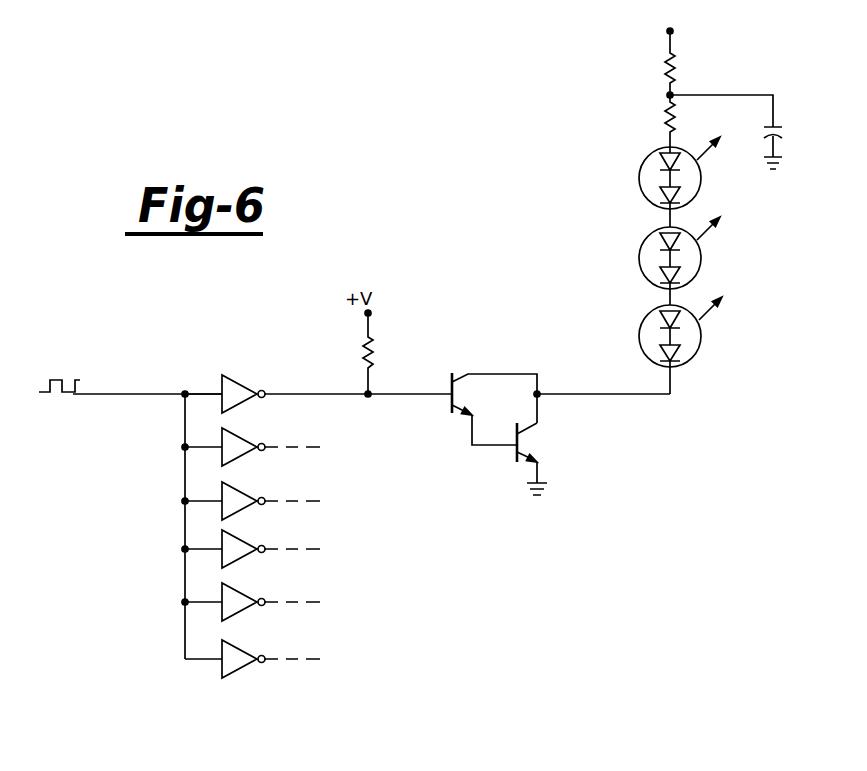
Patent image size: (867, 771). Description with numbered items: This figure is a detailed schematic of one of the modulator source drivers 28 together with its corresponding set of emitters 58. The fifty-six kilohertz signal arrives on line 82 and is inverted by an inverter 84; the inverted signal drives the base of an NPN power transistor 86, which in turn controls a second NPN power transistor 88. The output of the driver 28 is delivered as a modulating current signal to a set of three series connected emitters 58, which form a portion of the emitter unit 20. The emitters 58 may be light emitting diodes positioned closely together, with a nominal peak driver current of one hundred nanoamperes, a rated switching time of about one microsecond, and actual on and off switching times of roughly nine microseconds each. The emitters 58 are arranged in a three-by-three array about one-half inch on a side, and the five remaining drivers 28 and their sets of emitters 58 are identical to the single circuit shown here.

The line 82 is at (107, 395).
The inverter 84 is at (240, 388).
The NPN power transistor 86 is at (437, 382).
The NPN power transistor 88 is at (508, 478).
The modulator source driver 28 is at (525, 417).
The emitter unit 20 is at (674, 199).
The emitters 58 is at (701, 176).